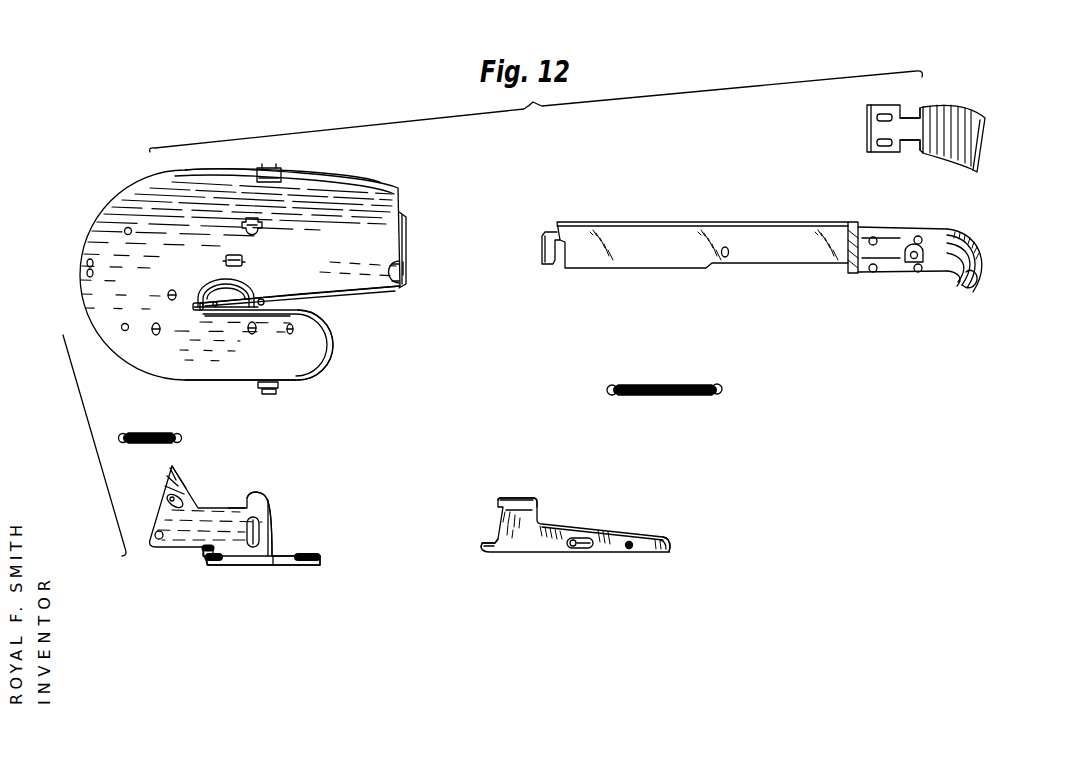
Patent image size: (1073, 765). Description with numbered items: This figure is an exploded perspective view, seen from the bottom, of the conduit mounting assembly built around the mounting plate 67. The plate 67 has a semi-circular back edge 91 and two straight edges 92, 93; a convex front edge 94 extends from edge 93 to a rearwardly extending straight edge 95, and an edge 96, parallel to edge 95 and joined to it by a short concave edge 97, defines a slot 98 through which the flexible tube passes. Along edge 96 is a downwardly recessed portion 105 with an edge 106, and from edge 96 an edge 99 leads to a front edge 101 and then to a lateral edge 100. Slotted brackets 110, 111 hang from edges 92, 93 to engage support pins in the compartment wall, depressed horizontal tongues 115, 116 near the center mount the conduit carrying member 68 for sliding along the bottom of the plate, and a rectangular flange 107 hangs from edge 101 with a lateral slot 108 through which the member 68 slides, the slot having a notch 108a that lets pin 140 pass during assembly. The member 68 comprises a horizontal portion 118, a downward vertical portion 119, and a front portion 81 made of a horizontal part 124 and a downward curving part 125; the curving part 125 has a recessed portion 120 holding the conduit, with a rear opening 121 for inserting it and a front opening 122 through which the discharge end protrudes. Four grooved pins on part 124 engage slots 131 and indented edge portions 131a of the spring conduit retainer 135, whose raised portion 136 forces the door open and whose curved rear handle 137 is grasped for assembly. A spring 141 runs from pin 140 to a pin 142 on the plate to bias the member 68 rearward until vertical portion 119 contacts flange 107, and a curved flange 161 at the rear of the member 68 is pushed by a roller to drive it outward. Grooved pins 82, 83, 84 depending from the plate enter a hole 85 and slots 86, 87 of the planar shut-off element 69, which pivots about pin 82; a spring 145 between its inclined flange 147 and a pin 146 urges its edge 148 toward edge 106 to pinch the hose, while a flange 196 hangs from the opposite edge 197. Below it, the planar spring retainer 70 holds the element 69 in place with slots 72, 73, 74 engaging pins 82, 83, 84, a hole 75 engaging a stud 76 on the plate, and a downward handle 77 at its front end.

The plate 67 is at (315, 253).
The conduit carrying member 68 is at (688, 217).
The planar shut-off element 69 is at (168, 562).
The planar spring retainer 70 is at (606, 560).
The slot 72 is at (490, 553).
The slot 73 is at (518, 497).
The slot 74 is at (580, 538).
The hole 75 is at (632, 542).
The stud 76 is at (290, 334).
The handle 77 is at (662, 538).
The front portion 81 is at (908, 288).
The grooved pin 82 is at (155, 335).
The grooved pin 83 is at (168, 294).
The grooved pin 84 is at (252, 335).
The hole 85 is at (152, 536).
The slot 86 is at (182, 500).
The slot 87 is at (262, 527).
The semi-circular back edge 91 is at (78, 268).
The straight edge 92 is at (207, 165).
The straight edge 93 is at (205, 382).
The convex front edge 94 is at (330, 345).
The rearwardly extending straight edge 95 is at (240, 316).
The edge 96 is at (262, 299).
The short concave edge 97 is at (193, 307).
The slot 98 is at (286, 302).
The edge 99 is at (360, 297).
The lateral edge 100 is at (345, 172).
The front edge 101 is at (408, 215).
The downwardly recessed portion 105 is at (248, 290).
The edge 106 is at (218, 290).
The rectangular flange 107 is at (407, 270).
The lateral slot 108 is at (397, 283).
The notch 108a is at (397, 262).
The slotted bracket 110 is at (268, 168).
The slotted bracket 111 is at (262, 395).
The depressed horizontal tongue 115 is at (263, 227).
The depressed horizontal tongue 116 is at (230, 255).
The horizontal portion 118 is at (648, 263).
The vertical portion 119 is at (849, 266).
The recessed portion 120 is at (947, 272).
The opening 121 is at (905, 262).
The opening 122 is at (978, 275).
The horizontal part 124 is at (895, 236).
The downward curving part 125 is at (960, 232).
The slot 131 is at (885, 117).
The indented edge portion 131a is at (922, 108).
The spring conduit retainer 135 is at (960, 104).
The raised portion 136 is at (988, 120).
The handle 137 is at (866, 108).
The pin 140 is at (735, 255).
The spring 141 is at (660, 398).
The pin 142 is at (93, 263).
The spring 145 is at (145, 432).
The pin 146 is at (93, 272).
The flange 147 is at (181, 478).
The edge 148 is at (232, 505).
The curved flange 161 is at (543, 240).
The flange 196 is at (232, 564).
The edge 197 is at (203, 557).